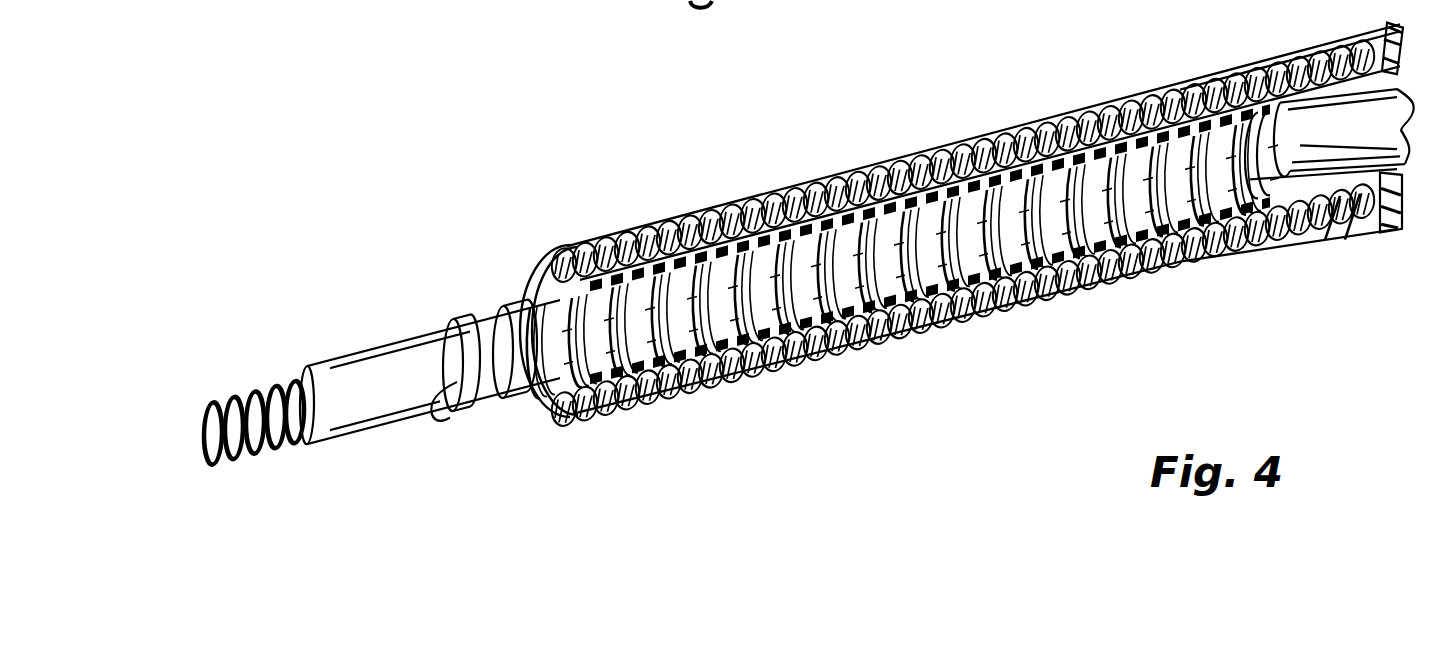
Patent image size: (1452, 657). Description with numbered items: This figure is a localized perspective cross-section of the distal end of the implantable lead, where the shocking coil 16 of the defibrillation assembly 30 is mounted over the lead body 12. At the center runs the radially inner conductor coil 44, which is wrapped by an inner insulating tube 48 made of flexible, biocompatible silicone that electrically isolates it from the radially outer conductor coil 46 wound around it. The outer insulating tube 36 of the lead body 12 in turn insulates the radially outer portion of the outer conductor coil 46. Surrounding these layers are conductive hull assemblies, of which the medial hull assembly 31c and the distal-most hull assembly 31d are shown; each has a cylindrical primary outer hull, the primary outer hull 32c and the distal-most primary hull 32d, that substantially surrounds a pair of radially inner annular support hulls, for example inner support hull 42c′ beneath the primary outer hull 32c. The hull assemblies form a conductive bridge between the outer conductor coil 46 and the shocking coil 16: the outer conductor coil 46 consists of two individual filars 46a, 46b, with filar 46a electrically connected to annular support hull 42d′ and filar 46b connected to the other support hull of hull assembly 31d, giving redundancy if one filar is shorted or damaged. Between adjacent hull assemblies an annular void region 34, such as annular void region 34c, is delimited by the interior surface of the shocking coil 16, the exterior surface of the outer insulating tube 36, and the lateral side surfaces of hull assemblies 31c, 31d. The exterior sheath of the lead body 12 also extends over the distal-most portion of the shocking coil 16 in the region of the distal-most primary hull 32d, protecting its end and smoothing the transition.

The lead body 12 is at (1375, 0).
The shocking coil 16 is at (856, 175).
The defibrillation assembly 30 is at (988, 355).
The medial hull assembly 31c is at (770, 205).
The hull assembly 31d is at (1212, 88).
The primary outer hull 32c is at (580, 290).
The distal-most primary hull 32d is at (1148, 100).
The annular void region 34 is at (1036, 135).
The annular void region 34c is at (995, 145).
The outer insulating tube 36 is at (920, 152).
The inner support hull 42c′ is at (630, 400).
The annular support hull 42d′ is at (1185, 250).
The radially inner conductor coil 44 is at (231, 408).
The radially outer conductor coil 46 is at (670, 290).
The filar 46a is at (1258, 180).
The filar 46b is at (1300, 222).
The inner insulating tube 48 is at (350, 362).